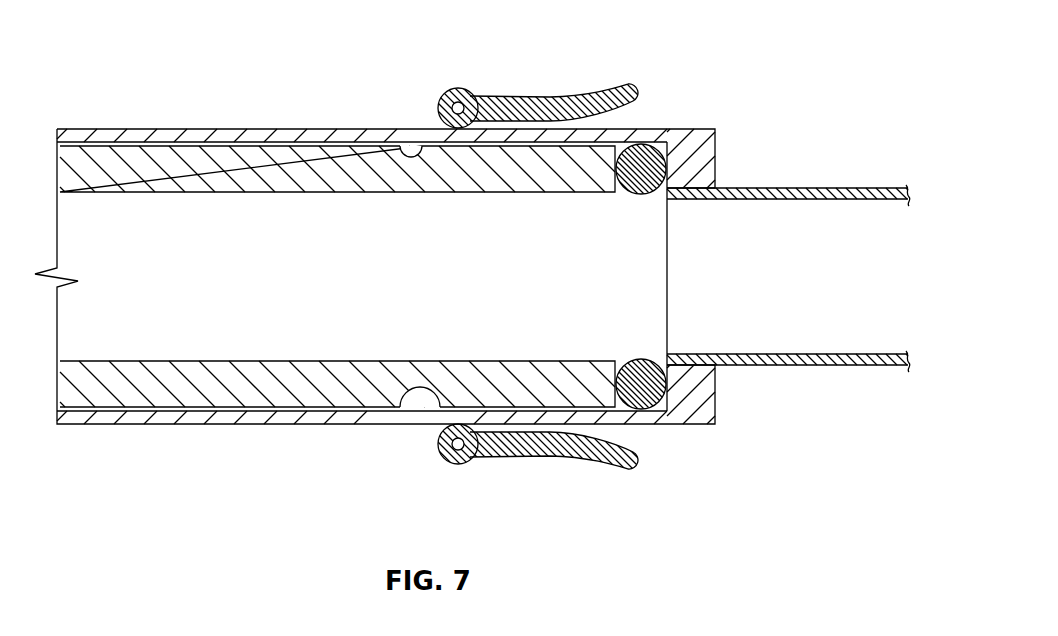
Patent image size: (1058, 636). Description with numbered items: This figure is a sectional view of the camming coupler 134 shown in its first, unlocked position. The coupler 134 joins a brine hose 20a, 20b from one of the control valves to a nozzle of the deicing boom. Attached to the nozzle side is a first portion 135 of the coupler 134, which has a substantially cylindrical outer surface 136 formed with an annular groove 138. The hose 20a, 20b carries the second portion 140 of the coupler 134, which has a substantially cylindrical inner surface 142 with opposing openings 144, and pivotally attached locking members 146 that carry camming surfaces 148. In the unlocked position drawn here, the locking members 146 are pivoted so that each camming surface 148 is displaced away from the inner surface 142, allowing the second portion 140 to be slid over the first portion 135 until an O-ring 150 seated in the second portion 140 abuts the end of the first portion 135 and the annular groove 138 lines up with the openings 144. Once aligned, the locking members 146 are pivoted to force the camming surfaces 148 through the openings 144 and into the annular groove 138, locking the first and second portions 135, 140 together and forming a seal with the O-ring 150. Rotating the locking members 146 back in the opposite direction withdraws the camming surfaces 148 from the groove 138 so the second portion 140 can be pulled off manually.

The hose 20a is at (810, 187).
The hose 20b is at (788, 361).
The coupler 134 is at (533, 276).
The first portion 135 is at (178, 410).
The substantially cylindrical outer surface 136 is at (123, 146).
The annular groove 138 is at (405, 147).
The second portion 140 is at (631, 126).
The substantially cylindrical inner surface 142 is at (540, 150).
The openings 144 is at (430, 141).
The locking members 146 is at (558, 98).
The camming surfaces 148 is at (455, 90).
The O-ring 150 is at (648, 150).